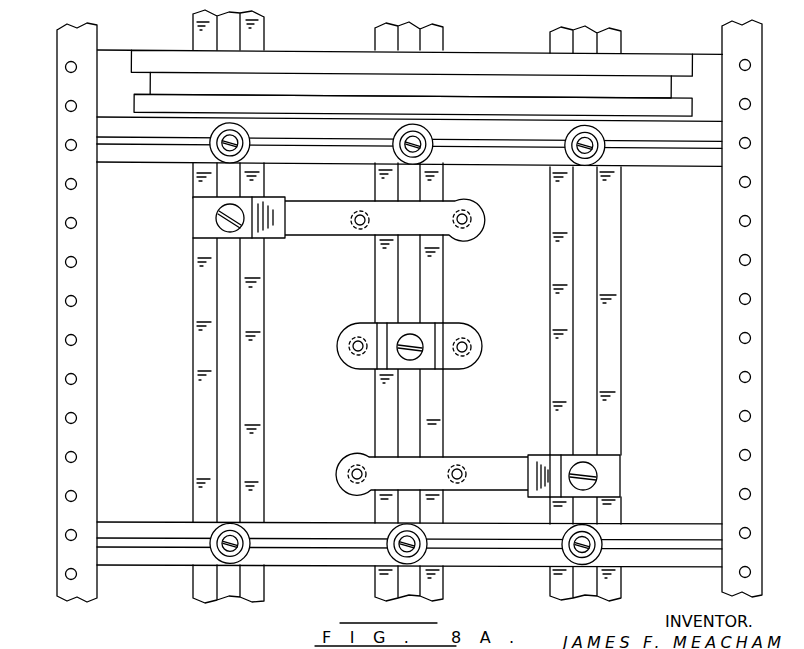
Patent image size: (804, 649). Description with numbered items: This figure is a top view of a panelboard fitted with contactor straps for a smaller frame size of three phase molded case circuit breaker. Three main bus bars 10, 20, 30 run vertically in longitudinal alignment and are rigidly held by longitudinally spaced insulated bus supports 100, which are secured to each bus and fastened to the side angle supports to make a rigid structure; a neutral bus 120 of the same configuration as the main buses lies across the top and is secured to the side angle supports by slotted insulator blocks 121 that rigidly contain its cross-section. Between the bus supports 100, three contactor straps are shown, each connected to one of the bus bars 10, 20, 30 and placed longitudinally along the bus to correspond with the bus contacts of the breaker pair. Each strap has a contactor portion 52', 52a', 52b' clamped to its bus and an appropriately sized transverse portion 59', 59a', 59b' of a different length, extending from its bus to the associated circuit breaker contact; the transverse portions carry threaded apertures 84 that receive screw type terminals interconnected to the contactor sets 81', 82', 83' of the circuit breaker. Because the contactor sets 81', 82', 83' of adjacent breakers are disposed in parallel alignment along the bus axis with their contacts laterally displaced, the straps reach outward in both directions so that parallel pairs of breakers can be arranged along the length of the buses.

The bus bar 10 is at (260, 344).
The bus bar 20 is at (443, 287).
The bus bar 30 is at (620, 273).
The insulated bus support 100 is at (161, 158).
The neutral bus 120 is at (302, 55).
The insulator block 121 is at (115, 57).
The transverse portion 59' is at (350, 225).
The transverse portion 59a' is at (407, 347).
The transverse portion 59b' is at (471, 464).
The contactor portion 52' is at (247, 235).
The contactor portion 52a' is at (432, 359).
The contactor portion 52b' is at (570, 465).
The contactor set 81' is at (396, 226).
The contactor set 82' is at (407, 348).
The contactor set 83' is at (425, 448).
The aperture 84 is at (355, 221).